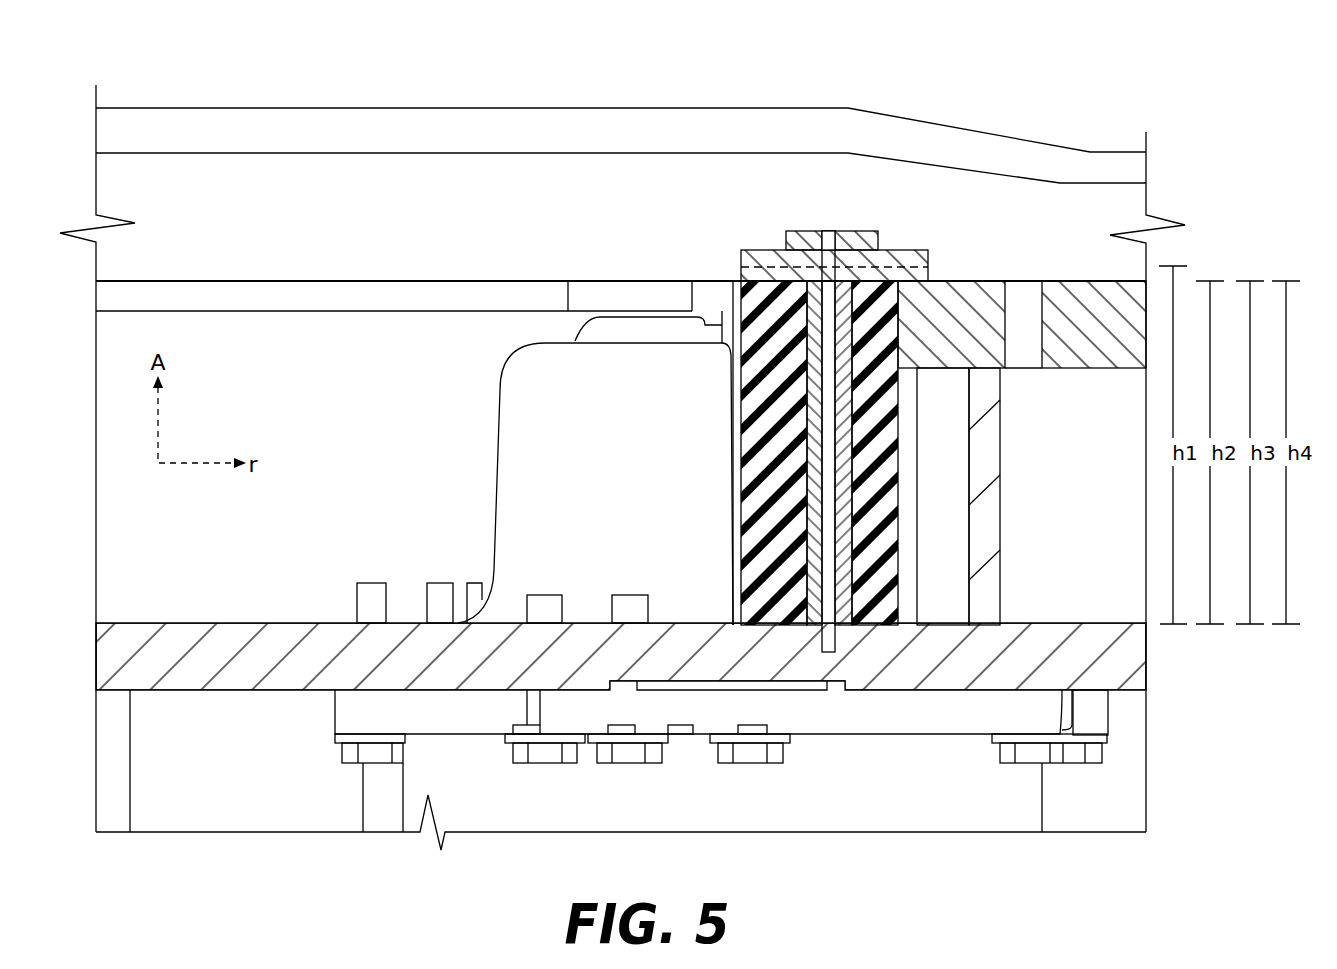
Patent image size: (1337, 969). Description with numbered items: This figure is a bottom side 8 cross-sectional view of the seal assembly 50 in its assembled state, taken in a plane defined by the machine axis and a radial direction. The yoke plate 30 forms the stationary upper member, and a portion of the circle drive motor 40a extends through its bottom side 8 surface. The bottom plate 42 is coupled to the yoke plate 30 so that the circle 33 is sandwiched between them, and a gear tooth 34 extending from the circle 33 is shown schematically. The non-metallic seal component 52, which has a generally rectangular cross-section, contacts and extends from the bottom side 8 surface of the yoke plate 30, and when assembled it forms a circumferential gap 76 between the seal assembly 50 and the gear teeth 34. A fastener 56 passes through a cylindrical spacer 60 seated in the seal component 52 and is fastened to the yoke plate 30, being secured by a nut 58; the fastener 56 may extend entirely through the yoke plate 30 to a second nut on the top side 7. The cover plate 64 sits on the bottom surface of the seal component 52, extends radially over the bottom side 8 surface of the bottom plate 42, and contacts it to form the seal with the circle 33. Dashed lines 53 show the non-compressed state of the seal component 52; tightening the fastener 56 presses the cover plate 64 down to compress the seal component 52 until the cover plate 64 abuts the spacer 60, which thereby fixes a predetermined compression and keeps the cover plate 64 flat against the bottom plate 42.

The bottom side 8 is at (653, 84).
The top side 7 is at (514, 858).
The yoke plate 30 is at (125, 652).
The circle drive motor 40a is at (530, 445).
The bottom plate 42 is at (972, 300).
The circle 33 is at (990, 421).
The gear tooth 34 is at (955, 466).
The seal assembly 50 is at (791, 222).
The non-metallic seal component 52 is at (762, 337).
The dashed lines 53 is at (885, 265).
The fastener 56 is at (830, 480).
The nut 58 is at (813, 230).
The spacer 60 is at (800, 410).
The cover plate 64 is at (913, 250).
The circumferential gap 76 is at (906, 484).